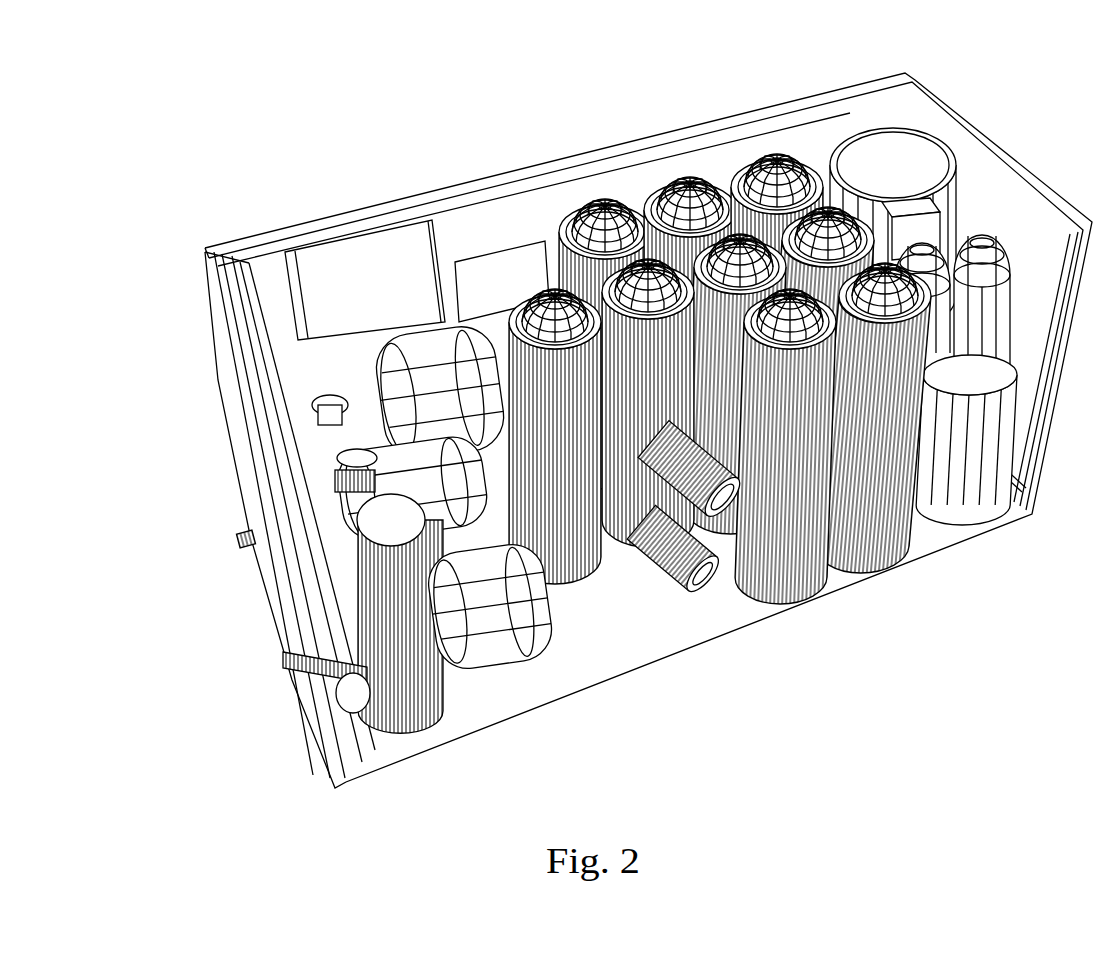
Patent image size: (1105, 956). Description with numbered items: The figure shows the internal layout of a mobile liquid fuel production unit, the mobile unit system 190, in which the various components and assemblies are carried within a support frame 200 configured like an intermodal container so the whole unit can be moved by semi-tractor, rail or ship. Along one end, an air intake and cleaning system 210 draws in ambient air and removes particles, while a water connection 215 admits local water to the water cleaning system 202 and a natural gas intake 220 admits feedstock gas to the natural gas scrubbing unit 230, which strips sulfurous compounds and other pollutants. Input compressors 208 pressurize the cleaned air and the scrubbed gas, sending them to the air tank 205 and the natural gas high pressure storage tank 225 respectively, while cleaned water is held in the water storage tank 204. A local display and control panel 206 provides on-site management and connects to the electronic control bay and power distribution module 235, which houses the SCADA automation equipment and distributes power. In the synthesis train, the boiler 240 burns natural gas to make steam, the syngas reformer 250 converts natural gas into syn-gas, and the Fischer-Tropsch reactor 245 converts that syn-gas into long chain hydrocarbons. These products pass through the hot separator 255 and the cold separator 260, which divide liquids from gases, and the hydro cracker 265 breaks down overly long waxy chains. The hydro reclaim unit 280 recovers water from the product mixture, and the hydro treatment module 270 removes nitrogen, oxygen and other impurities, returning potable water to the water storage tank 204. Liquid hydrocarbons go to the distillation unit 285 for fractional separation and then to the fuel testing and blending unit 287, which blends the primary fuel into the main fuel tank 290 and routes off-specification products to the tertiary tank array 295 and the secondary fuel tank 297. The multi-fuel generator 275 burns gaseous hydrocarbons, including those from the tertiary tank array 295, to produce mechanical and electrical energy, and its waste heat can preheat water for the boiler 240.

The mobile unit system 190 is at (950, 108).
The support frame 200 is at (208, 248).
The water cleaning system 202 is at (325, 397).
The water storage tank 204 is at (390, 467).
The air tank 205 is at (443, 372).
The local display and control panel 206 is at (367, 273).
The input compressor 208 is at (357, 450).
The air intake and cleaning system 210 is at (218, 380).
The water connection 215 is at (240, 541).
The natural gas intake 220 is at (285, 660).
The natural gas high pressure storage tank 225 is at (467, 630).
The natural gas scrubbing unit 230 is at (404, 660).
The electronic control bay and power distribution module 235 is at (496, 257).
The boiler 240 is at (553, 518).
The Fischer-Tropsch reactor 245 is at (597, 236).
The syngas reformer 250 is at (620, 505).
The hot separator 255 is at (683, 200).
The cold separator 260 is at (757, 182).
The hydro cracker 265 is at (753, 280).
The hydro treatment module 270 is at (784, 517).
The multi-fuel generator 275 is at (725, 517).
The hydro reclaim unit 280 is at (861, 481).
The distillation unit 285 is at (840, 240).
The fuel testing and blending unit 287 is at (907, 200).
The main fuel tank 290 is at (866, 173).
The tertiary tank array 295 is at (988, 280).
The secondary fuel tank 297 is at (983, 443).